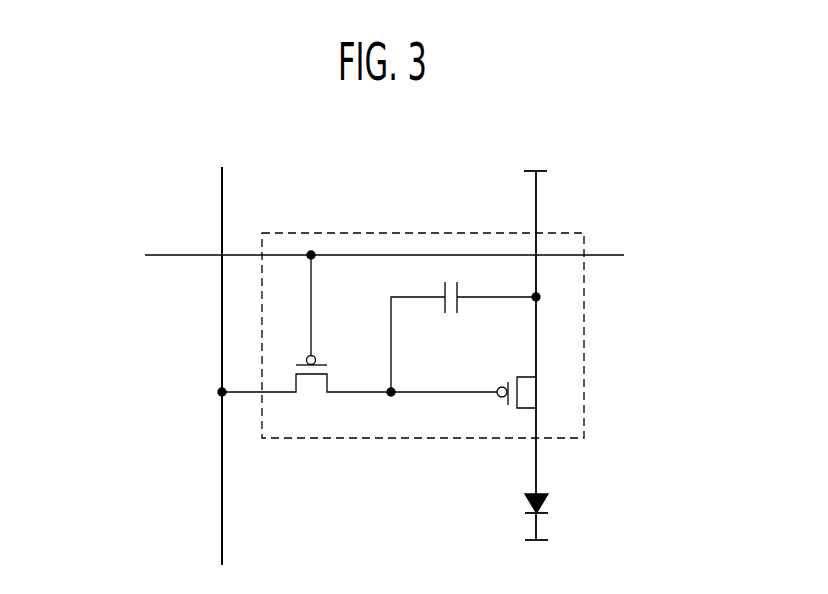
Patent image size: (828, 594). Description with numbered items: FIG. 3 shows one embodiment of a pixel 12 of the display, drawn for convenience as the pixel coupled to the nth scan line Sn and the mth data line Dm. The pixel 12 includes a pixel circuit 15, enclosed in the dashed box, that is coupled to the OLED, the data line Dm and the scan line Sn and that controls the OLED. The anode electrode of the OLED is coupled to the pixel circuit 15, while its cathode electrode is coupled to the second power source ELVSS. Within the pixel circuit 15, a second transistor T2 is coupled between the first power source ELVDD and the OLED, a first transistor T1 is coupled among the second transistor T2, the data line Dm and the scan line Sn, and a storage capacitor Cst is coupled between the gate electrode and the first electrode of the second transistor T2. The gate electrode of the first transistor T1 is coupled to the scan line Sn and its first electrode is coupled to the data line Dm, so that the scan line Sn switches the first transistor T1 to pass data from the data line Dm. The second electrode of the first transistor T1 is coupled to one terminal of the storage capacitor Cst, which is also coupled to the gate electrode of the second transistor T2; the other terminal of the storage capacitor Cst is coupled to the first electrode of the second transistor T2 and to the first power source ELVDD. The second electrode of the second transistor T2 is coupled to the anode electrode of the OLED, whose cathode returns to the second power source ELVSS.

The pixel 12 is at (114, 135).
The pixel circuit 15 is at (584, 310).
The data line Dm is at (222, 175).
The scan line Sn is at (161, 256).
The first power source ELVDD is at (536, 258).
The second power source ELVSS is at (535, 544).
The first transistor T1 is at (306, 335).
The second transistor T2 is at (474, 435).
The storage capacitor Cst is at (465, 337).
The organic light emitting diode OLED is at (509, 504).